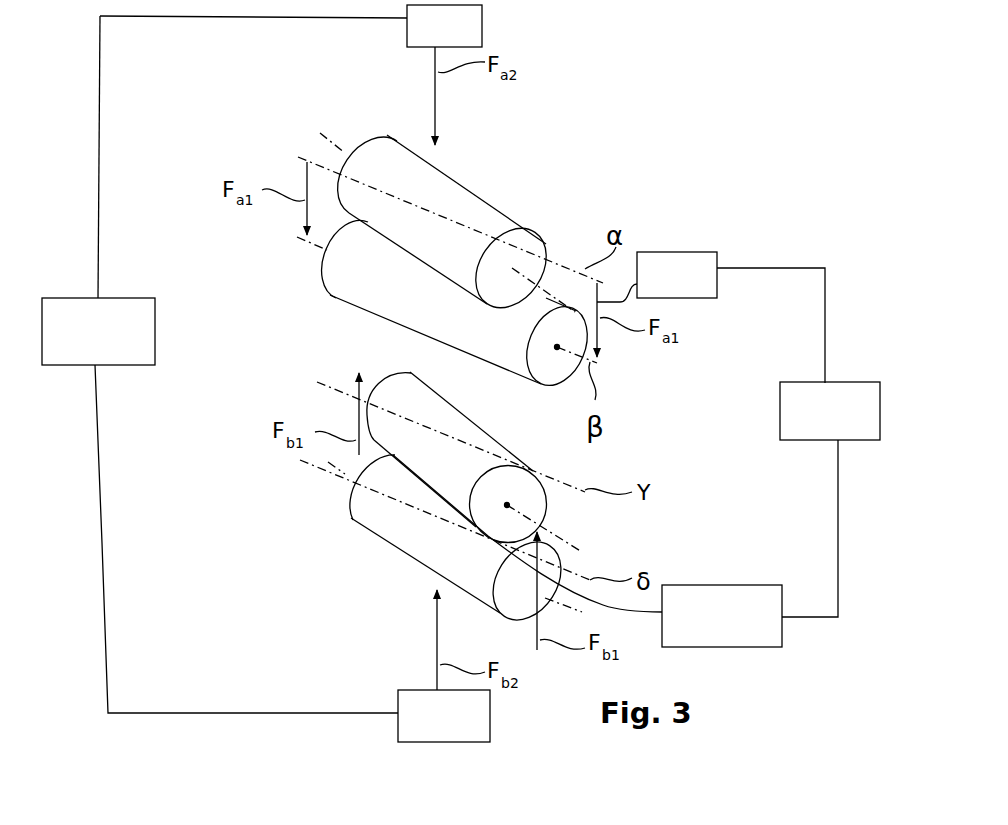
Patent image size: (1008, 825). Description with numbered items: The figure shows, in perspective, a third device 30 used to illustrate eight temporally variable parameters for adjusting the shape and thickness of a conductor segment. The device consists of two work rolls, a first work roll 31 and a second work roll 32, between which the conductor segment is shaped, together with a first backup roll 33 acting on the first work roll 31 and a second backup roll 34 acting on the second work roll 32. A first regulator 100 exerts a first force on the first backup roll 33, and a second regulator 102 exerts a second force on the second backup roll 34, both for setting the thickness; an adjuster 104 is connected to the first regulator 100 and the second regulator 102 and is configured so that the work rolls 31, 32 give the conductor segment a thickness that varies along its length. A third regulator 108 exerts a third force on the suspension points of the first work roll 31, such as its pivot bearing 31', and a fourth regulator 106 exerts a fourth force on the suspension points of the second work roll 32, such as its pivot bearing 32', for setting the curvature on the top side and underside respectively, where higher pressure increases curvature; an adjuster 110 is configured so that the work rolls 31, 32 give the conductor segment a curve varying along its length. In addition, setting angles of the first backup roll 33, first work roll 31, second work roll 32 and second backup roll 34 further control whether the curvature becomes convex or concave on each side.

The third device 30 is at (576, 148).
The first work roll 31 is at (424, 307).
The second work roll 32 is at (448, 432).
The first backup roll 33 is at (366, 133).
The second backup roll 34 is at (345, 500).
The pivot bearing 31' is at (513, 375).
The pivot bearing 32' is at (527, 459).
The first regulator 100 is at (444, 26).
The second regulator 102 is at (444, 716).
The adjuster 104 is at (98, 331).
The fourth regulator 106 is at (722, 616).
The third regulator 108 is at (677, 276).
The adjuster 110 is at (830, 411).